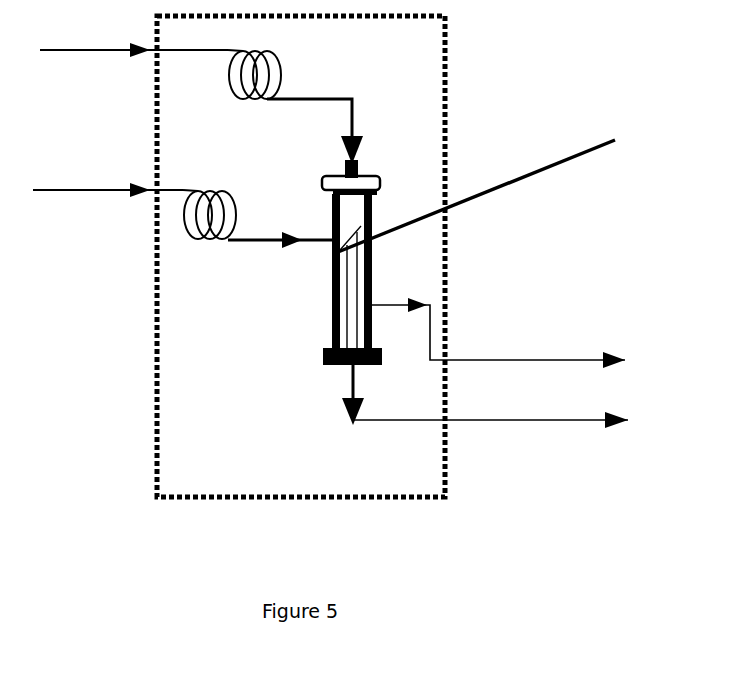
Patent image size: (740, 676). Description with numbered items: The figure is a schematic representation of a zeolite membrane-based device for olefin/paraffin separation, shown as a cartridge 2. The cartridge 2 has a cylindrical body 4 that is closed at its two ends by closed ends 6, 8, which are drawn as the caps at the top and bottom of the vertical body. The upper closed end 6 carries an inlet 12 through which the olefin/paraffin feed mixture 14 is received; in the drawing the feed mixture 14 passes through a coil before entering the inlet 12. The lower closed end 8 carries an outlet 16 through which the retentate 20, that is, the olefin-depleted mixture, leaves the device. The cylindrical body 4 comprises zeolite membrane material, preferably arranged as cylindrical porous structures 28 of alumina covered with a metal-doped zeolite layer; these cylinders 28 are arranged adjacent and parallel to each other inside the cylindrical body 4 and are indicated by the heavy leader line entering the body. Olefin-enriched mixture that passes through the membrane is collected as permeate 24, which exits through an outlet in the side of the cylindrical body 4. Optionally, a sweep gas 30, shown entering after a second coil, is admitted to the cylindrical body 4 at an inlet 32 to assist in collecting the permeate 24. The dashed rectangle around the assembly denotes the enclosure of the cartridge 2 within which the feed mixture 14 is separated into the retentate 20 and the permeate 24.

The cartridge 2 is at (412, 137).
The cylindrical body 4 is at (333, 300).
The closed end 6 is at (381, 183).
The closed end 8 is at (336, 360).
The inlet 12 is at (345, 168).
The olefin/paraffin feed mixture 14 is at (292, 99).
The outlet 16 is at (348, 378).
The retentate 20 is at (540, 420).
The permeate 24 is at (515, 360).
The cylindrical porous structures 28 is at (496, 192).
The sweep gas 30 is at (243, 246).
The inlet 32 is at (325, 236).